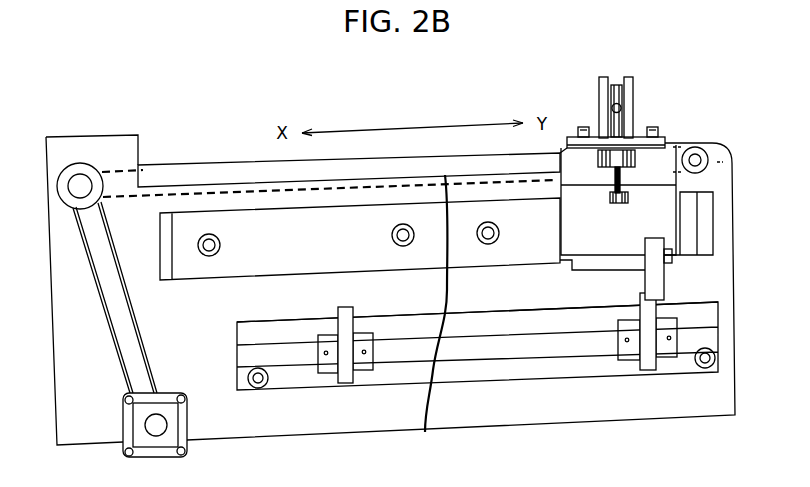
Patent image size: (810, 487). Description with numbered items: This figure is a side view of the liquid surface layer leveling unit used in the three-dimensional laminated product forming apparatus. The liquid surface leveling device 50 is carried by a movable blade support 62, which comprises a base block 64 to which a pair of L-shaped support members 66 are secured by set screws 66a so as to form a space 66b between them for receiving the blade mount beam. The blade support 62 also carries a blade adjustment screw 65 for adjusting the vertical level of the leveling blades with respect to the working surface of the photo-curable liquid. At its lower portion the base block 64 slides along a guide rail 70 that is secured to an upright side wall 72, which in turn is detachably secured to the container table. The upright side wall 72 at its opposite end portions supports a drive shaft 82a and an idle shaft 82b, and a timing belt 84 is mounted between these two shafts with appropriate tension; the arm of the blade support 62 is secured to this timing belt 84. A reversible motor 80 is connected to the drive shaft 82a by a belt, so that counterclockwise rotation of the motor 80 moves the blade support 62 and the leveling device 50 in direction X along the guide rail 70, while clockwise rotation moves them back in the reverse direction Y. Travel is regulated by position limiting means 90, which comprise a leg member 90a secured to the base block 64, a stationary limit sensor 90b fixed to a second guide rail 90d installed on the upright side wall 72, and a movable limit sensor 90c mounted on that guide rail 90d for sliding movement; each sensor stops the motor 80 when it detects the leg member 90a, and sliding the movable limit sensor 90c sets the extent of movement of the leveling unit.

The liquid surface leveling device 50 is at (608, 78).
The movable blade support 62 is at (570, 53).
The base block 64 is at (568, 258).
The blade adjustment screw 65 is at (617, 203).
The L-shaped support member 66 is at (599, 82).
The set screw 66a is at (583, 127).
The space 66b is at (617, 83).
The guide rail 70 is at (247, 278).
The upright side wall 72 is at (138, 135).
The reversible motor 80 is at (123, 415).
The drive shaft 82a is at (73, 207).
The idle shaft 82b is at (700, 148).
The timing belt 84 is at (207, 163).
The position limiting means 90 is at (488, 393).
The leg member 90a is at (664, 278).
The stationary limit sensor 90b is at (640, 300).
The movable limit sensor 90c is at (352, 310).
The guide rail 90d is at (571, 372).